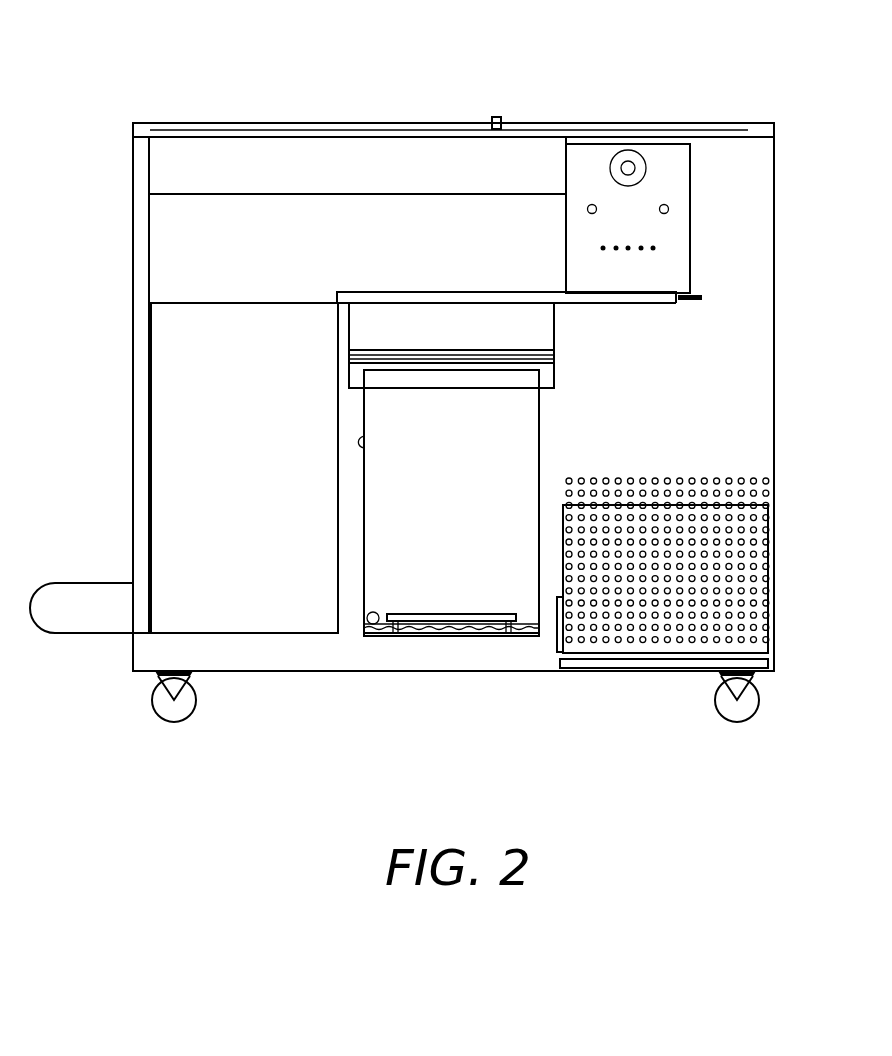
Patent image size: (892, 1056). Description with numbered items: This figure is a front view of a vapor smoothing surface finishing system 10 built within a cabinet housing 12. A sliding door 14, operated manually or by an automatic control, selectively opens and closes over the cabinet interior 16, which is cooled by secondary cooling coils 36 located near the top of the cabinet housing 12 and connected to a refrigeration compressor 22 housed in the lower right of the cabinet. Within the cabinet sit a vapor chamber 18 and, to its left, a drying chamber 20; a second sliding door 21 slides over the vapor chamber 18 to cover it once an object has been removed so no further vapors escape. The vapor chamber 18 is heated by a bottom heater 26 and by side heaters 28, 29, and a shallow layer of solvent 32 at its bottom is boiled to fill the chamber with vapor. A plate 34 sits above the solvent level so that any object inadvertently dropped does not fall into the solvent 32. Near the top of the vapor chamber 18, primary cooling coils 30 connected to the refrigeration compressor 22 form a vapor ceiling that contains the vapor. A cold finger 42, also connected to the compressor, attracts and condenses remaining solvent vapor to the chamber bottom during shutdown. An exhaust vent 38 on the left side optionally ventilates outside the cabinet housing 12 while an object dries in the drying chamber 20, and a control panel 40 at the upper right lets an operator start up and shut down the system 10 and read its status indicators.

The vapor smoothing surface finishing system 10 is at (71, 108).
The cabinet housing 12 is at (133, 207).
The sliding door 14 is at (512, 121).
The cabinet interior 16 is at (234, 192).
The vapor chamber 18 is at (451, 503).
The drying chamber 20 is at (244, 468).
The sliding door 21 is at (415, 298).
The refrigeration compressor 22 is at (725, 590).
The bottom heater 26 is at (405, 638).
The side heater 28 is at (540, 466).
The side heater 29 is at (358, 441).
The primary cooling coils 30 is at (520, 348).
The solvent 32 is at (473, 633).
The plate 34 is at (423, 612).
The secondary cooling coils 36 is at (528, 157).
The exhaust vent 38 is at (70, 590).
The control panel 40 is at (665, 173).
The cold finger 42 is at (375, 611).